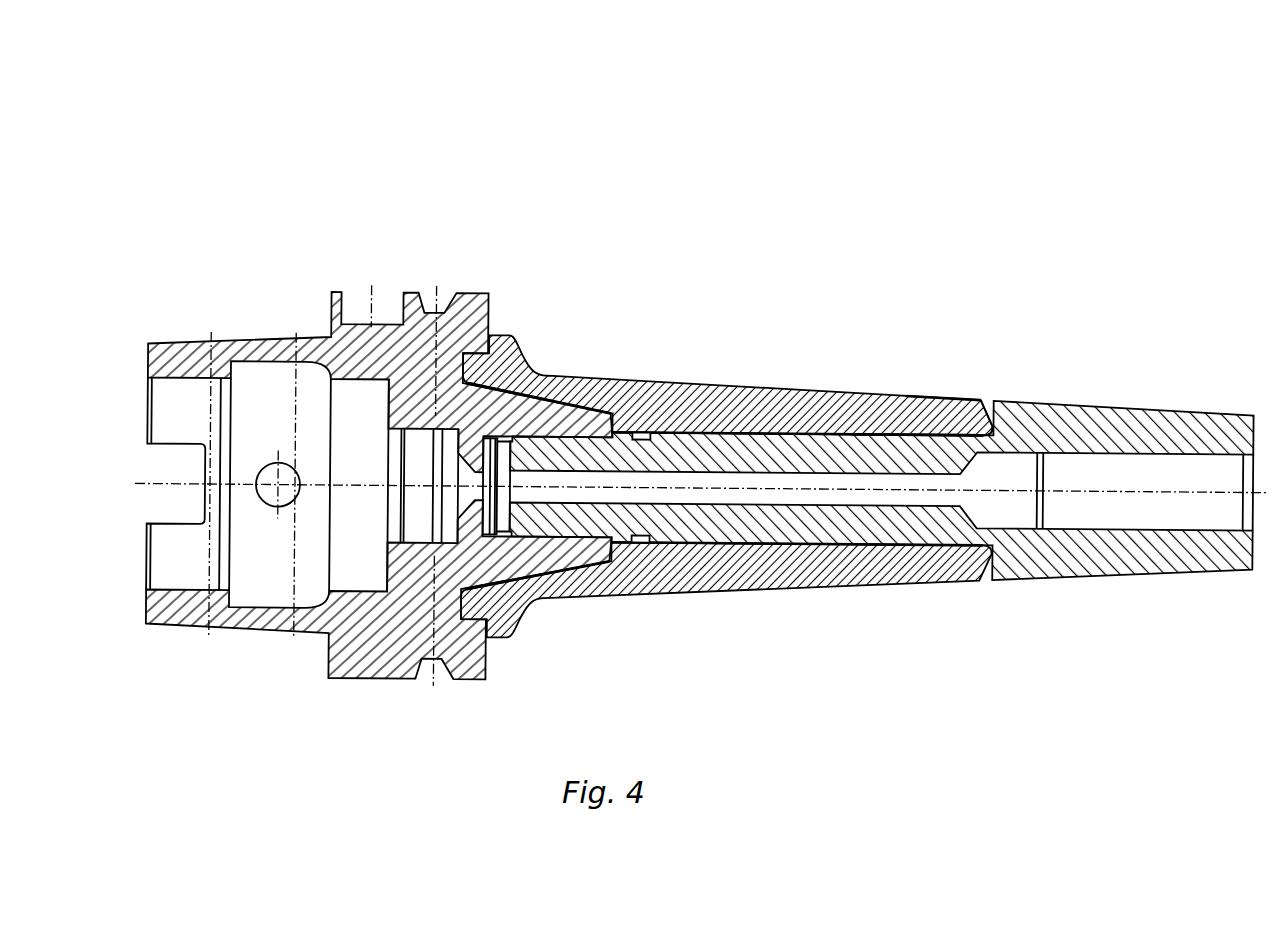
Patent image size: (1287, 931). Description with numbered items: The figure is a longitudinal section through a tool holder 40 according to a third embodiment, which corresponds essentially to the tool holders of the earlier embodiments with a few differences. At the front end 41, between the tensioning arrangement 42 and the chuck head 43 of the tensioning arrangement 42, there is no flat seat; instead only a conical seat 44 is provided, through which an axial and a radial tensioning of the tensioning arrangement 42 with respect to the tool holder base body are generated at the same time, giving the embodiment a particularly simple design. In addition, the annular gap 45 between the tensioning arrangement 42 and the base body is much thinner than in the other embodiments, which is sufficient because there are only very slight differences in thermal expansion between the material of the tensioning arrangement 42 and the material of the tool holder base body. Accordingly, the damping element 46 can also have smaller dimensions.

The tool holder 40 is at (701, 365).
The front end 41 is at (931, 410).
The tensioning arrangement 42 is at (747, 406).
The chuck head 43 is at (1072, 426).
The conical seat 44 is at (977, 398).
The annular gap 45 is at (870, 552).
The damping element 46 is at (641, 546).